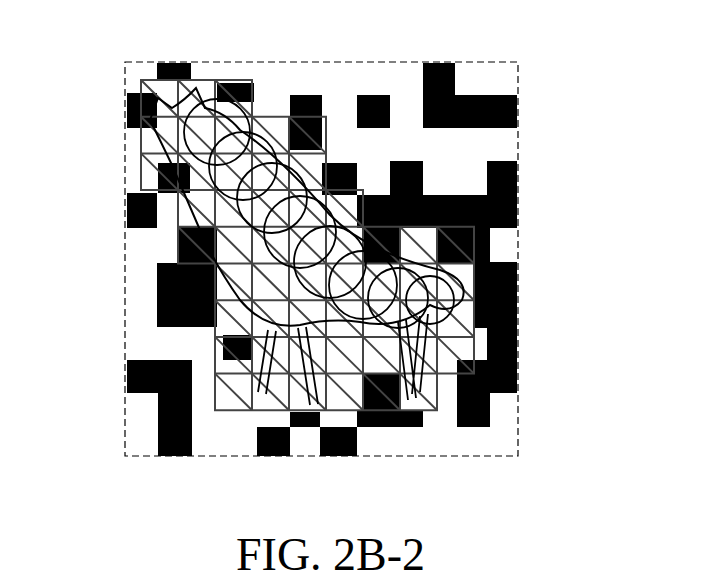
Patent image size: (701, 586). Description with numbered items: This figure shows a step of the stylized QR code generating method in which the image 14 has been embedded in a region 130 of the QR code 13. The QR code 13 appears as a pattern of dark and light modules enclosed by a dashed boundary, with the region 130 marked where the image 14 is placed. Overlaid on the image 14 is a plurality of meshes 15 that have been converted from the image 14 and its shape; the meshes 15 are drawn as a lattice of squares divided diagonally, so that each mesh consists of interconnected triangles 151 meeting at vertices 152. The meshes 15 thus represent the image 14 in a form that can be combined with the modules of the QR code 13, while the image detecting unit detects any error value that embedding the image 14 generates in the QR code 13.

The region 130 is at (518, 145).
The QR code 13 is at (127, 113).
The image 14 is at (208, 100).
The meshes 15 is at (274, 109).
The triangles 151 is at (143, 175).
The vertices 152 is at (143, 155).